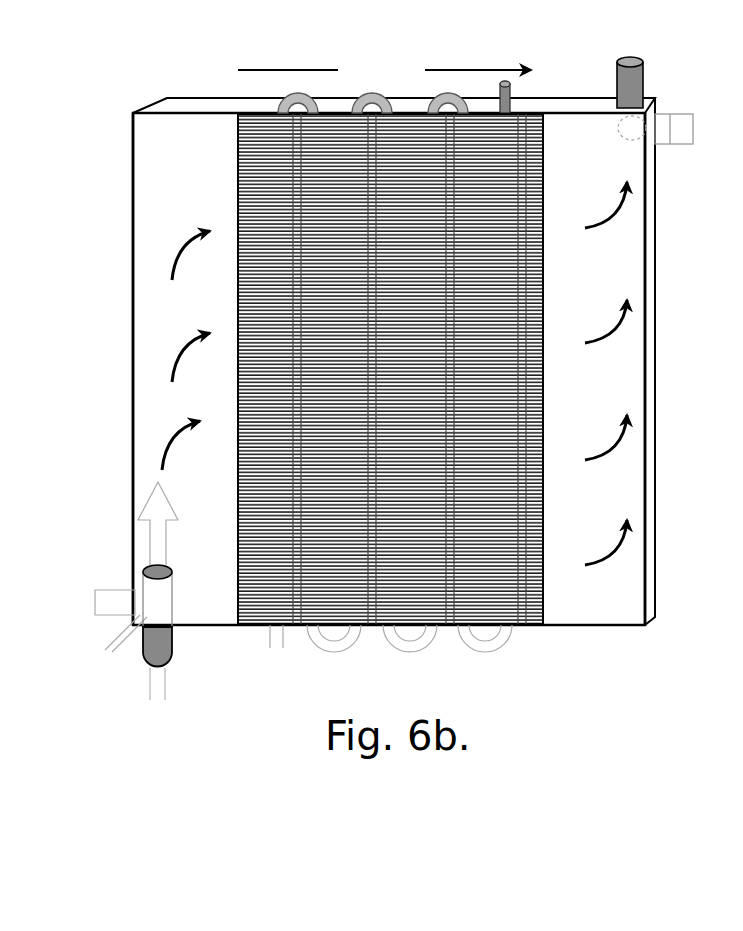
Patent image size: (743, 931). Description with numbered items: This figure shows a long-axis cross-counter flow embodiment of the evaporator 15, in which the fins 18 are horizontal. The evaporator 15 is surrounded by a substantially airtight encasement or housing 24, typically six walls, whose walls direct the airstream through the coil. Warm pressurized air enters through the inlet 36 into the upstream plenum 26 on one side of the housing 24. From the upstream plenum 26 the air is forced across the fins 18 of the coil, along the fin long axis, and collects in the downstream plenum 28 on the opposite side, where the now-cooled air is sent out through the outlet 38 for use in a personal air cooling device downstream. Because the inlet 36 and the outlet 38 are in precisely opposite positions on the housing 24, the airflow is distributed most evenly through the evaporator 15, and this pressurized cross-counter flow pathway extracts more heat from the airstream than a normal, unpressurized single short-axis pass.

The evaporator 15 is at (102, 107).
The fins 18 is at (528, 150).
The encasement or housing 24 is at (142, 224).
The upstream plenum 26 is at (176, 350).
The downstream plenum 28 is at (616, 368).
The inlet 36 is at (133, 649).
The outlet 38 is at (652, 79).